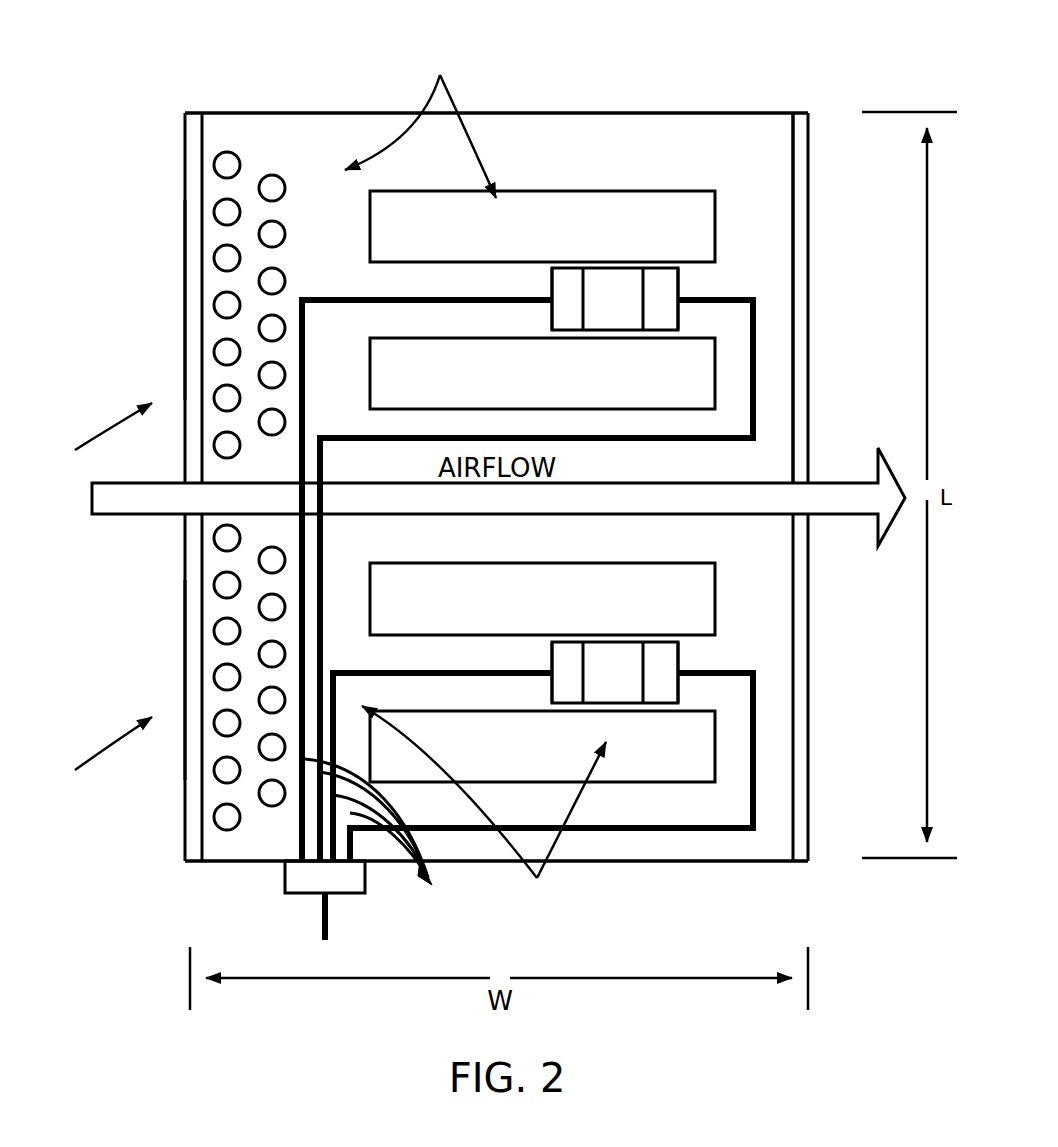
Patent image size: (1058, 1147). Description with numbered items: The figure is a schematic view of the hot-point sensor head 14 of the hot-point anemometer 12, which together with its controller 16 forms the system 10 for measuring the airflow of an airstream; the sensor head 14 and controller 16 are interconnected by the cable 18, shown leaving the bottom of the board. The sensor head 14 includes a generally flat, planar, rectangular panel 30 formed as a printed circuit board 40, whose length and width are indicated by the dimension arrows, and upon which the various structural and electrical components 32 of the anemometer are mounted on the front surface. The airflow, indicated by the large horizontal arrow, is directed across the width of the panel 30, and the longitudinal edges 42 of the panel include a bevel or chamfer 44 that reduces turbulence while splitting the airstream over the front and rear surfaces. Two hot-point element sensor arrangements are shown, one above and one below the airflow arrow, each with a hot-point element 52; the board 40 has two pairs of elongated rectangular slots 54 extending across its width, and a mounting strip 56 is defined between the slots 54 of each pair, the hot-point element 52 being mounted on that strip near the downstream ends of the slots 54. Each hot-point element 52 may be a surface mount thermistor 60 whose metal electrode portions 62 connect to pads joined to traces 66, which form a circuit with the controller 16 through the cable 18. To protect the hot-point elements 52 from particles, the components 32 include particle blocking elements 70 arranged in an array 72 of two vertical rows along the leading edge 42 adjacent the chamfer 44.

The system 10 is at (437, 433).
The hot-point anemometer 12 is at (222, 86).
The hot-point sensor head 14 is at (150, 288).
The controller 16 is at (335, 135).
The cable 18 is at (332, 915).
The panel 30 is at (672, 268).
The printed circuit board 40 is at (682, 148).
The components 32 is at (475, 476).
The longitudinal edges 42 is at (183, 820).
The chamfer 44 is at (195, 752).
The hot-point element 52 is at (630, 283).
The rectangular slots 54 is at (690, 368).
The mounting strip 56 is at (450, 285).
The thermistor 60 is at (613, 293).
The metal electrode portions 62 is at (568, 283).
The traces 66 is at (385, 841).
The particle blocking elements 70 is at (262, 226).
The array 72 is at (98, 601).